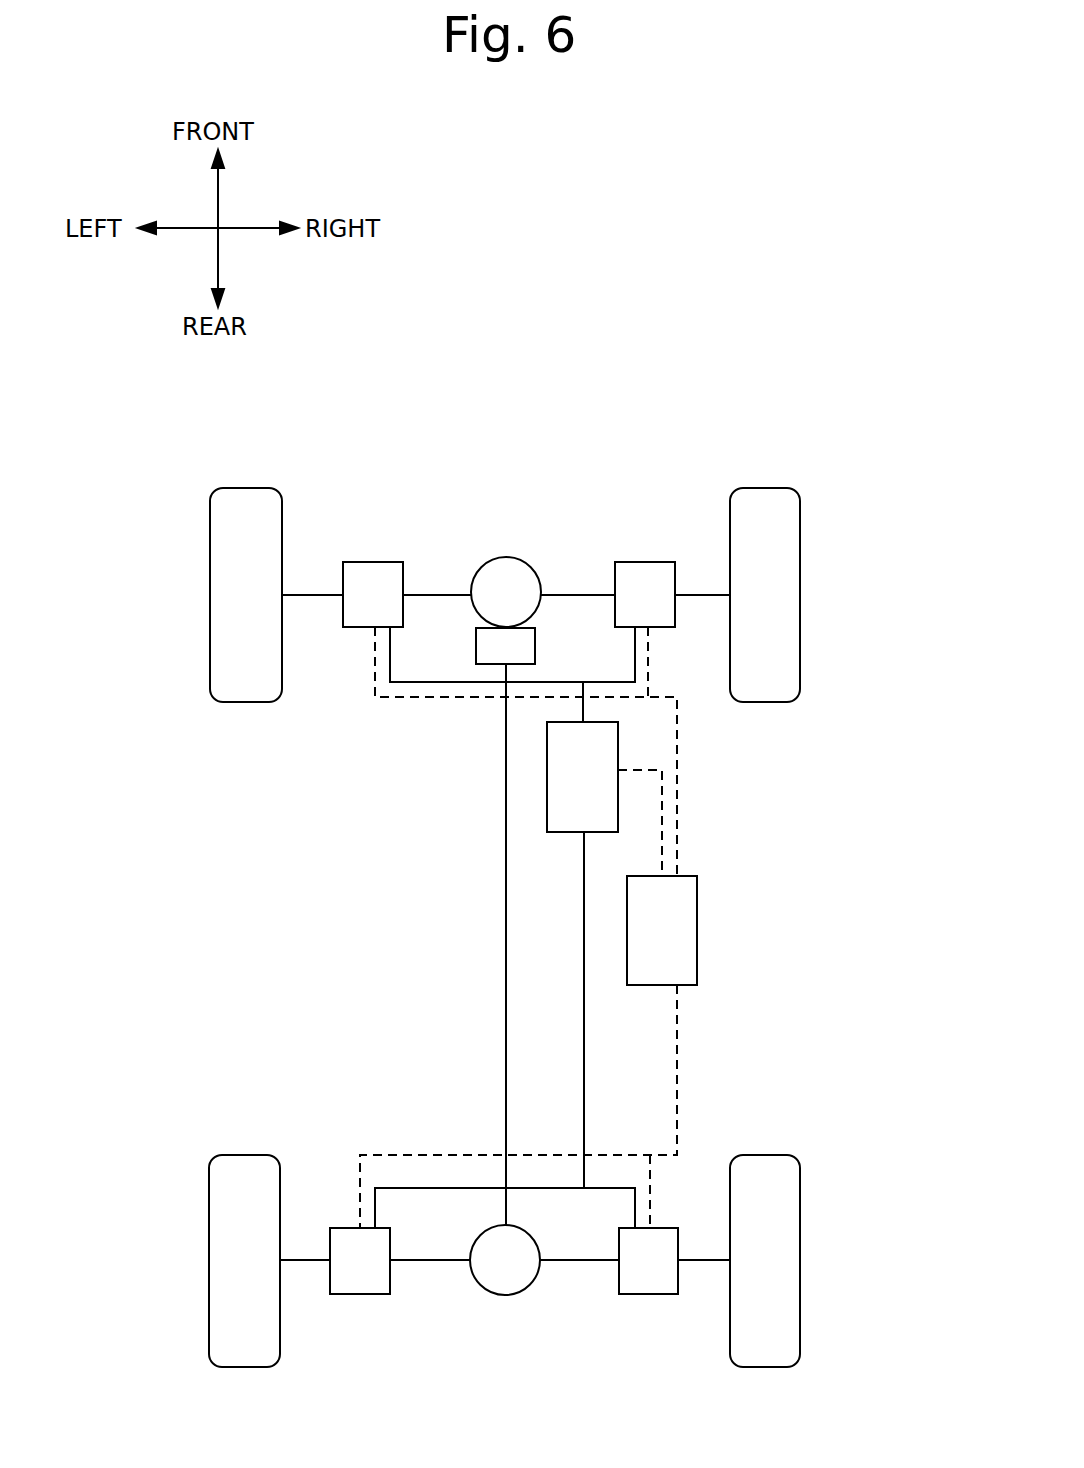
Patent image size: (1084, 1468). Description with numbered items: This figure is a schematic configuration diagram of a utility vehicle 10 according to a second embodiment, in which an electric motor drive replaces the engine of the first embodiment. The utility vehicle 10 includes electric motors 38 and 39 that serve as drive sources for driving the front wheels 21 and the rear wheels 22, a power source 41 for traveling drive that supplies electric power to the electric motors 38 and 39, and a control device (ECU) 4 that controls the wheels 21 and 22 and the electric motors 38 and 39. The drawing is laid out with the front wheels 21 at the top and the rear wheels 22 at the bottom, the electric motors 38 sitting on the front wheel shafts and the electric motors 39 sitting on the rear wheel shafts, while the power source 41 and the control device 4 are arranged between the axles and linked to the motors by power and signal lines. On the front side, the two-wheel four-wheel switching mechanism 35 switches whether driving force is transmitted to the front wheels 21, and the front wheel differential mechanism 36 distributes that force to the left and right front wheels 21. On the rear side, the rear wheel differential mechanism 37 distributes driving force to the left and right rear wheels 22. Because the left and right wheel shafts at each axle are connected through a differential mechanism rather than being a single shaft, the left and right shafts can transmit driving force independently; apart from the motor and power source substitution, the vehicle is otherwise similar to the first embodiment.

The utility vehicle 10 is at (819, 433).
The front wheels 21 is at (222, 552).
The rear wheels 22 is at (222, 1240).
The two-wheel four-wheel switching mechanism 35 is at (525, 645).
The front wheel differential mechanism 36 is at (506, 565).
The rear wheel differential mechanism 37 is at (503, 1295).
The electric motor 38 is at (377, 567).
The electric motor 39 is at (357, 1294).
The power source 41 is at (597, 752).
The control device (ECU) 4 is at (675, 922).